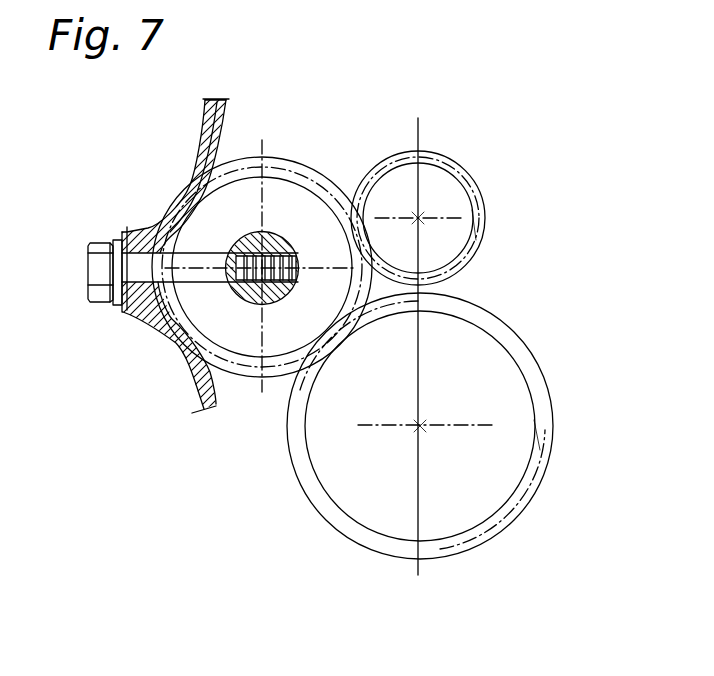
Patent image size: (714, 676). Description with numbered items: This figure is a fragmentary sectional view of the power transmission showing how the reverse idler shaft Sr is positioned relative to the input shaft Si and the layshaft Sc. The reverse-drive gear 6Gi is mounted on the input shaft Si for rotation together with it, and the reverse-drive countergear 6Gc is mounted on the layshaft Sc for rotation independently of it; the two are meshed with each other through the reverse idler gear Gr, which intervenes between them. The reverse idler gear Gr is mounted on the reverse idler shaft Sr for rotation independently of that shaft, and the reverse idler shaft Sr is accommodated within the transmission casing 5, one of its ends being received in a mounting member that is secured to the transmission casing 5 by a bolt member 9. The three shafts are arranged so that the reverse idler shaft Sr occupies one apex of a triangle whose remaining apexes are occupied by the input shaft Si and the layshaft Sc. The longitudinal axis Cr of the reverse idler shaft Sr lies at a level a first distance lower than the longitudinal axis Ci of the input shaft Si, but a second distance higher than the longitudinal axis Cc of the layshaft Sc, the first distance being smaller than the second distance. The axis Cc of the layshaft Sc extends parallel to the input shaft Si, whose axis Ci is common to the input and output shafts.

The transmission casing 5 is at (200, 143).
The bolt member 9 is at (88, 274).
The reverse idler shaft Sr is at (281, 233).
The longitudinal axis of the reverse idler shaft Cr is at (252, 288).
The reverse idler gear Gr is at (270, 154).
The reverse-drive gear 6Gi is at (440, 150).
The longitudinal axis of the input shaft Ci is at (420, 217).
The input shaft Si is at (478, 234).
The reverse-drive countergear 6Gc is at (510, 530).
The longitudinal axis of the layshaft Cc is at (426, 425).
The layshaft Sc is at (538, 438).